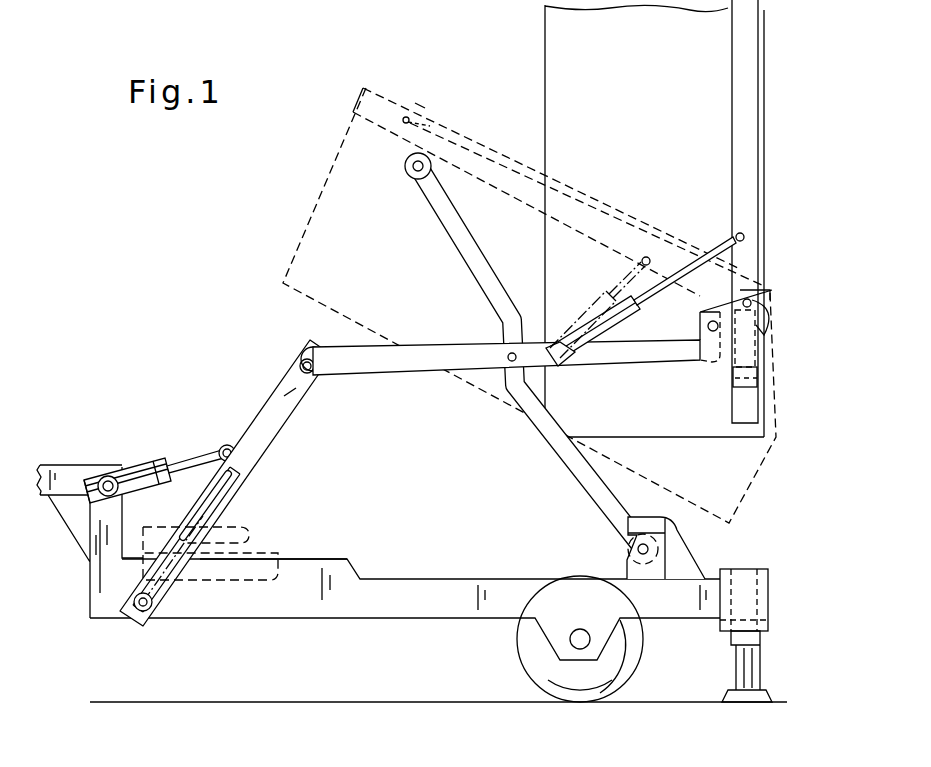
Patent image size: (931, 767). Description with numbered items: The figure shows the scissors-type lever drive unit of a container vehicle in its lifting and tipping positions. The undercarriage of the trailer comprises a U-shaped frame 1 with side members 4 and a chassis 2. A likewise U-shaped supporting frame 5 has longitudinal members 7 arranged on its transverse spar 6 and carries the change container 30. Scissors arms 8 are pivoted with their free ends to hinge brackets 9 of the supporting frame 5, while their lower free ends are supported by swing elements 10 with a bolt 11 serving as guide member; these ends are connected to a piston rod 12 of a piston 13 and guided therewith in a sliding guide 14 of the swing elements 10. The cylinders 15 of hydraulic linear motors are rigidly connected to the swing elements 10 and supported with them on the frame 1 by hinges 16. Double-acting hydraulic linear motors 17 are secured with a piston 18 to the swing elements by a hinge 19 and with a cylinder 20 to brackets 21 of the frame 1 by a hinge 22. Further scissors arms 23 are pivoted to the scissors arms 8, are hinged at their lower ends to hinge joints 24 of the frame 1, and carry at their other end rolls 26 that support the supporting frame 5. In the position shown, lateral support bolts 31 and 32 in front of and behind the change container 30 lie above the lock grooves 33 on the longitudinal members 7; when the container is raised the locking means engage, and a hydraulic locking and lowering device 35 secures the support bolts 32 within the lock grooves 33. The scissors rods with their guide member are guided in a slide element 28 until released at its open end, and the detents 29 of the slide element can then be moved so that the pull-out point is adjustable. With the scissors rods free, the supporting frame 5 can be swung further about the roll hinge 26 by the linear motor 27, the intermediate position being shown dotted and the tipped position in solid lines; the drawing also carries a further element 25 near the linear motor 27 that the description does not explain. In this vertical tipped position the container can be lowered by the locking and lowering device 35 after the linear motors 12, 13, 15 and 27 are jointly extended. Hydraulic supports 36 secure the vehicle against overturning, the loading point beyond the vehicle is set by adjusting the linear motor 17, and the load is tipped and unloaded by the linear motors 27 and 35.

The frame 1 is at (405, 624).
The chassis 2 is at (532, 655).
The side members 4 is at (297, 600).
The supporting frame 5 is at (706, 50).
The transverse spar 6 is at (361, 99).
The longitudinal members 7 is at (742, 83).
The scissors arms 8 is at (370, 365).
The hinge brackets 9 is at (708, 324).
The swing elements 10 is at (292, 378).
The bolt 11 is at (318, 372).
The piston rod 12 is at (312, 346).
The piston 13 is at (284, 396).
The sliding guide 14 is at (282, 417).
The cylinders 15 is at (176, 584).
The hinges 16 is at (128, 614).
The double-acting hydraulic linear motors 17 is at (140, 438).
The piston 18 is at (196, 462).
The hinge 19 is at (233, 447).
The cylinder 20 is at (155, 492).
The brackets 21 is at (108, 575).
The hinge 22 is at (105, 474).
The scissors arms 23 is at (492, 296).
The hinge joints 24 is at (660, 548).
The hydraulic cylinder 25 is at (637, 306).
The rolls 26 is at (412, 171).
The linear motor 27 is at (610, 322).
The slide element 28 is at (248, 540).
The detents 29 is at (272, 574).
The change container 30 is at (529, 305).
The lateral support bolt 31 is at (405, 117).
The lateral support bolt 32 is at (751, 302).
The lock grooves 33 is at (421, 100).
The hydraulic locking and lowering device 35 is at (748, 413).
The hydraulic supports 36 is at (745, 664).